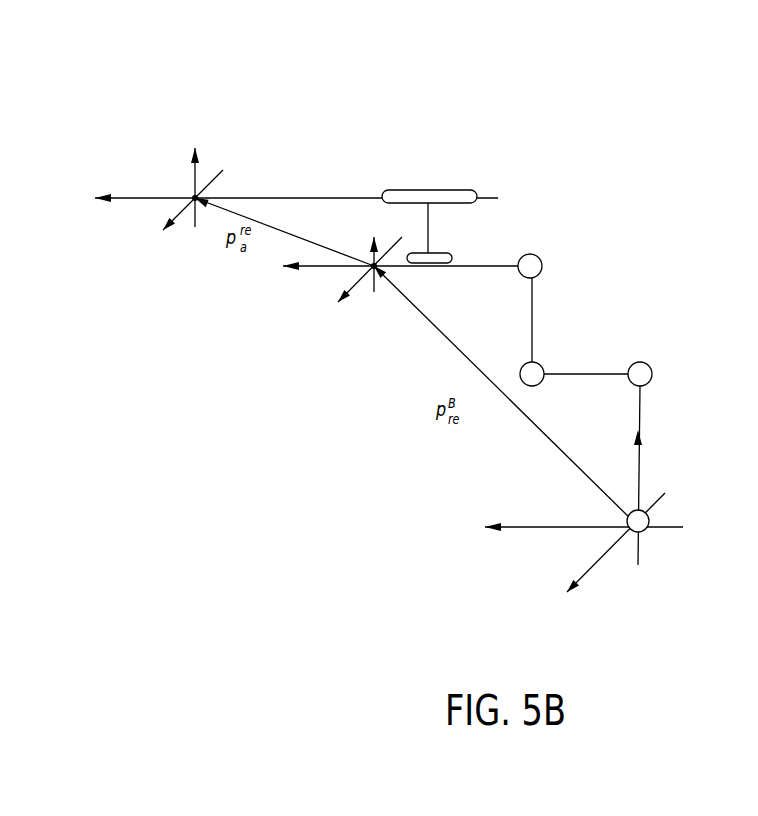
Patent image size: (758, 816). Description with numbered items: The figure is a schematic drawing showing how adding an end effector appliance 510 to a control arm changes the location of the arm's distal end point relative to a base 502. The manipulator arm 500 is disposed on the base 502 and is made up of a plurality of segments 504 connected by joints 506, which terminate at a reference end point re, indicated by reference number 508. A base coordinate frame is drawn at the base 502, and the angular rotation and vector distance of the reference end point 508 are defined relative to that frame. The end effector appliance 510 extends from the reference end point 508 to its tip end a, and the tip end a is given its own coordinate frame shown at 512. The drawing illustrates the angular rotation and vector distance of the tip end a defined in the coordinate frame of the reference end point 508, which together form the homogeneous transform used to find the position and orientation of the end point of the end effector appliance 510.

The manipulator arm 500 is at (541, 376).
The base 502 is at (640, 532).
The segments 504 is at (493, 265).
The joints 506 is at (530, 253).
The reference end point 508 is at (364, 297).
The end effector appliance 510 is at (428, 175).
The target anchor frame 512 is at (214, 190).